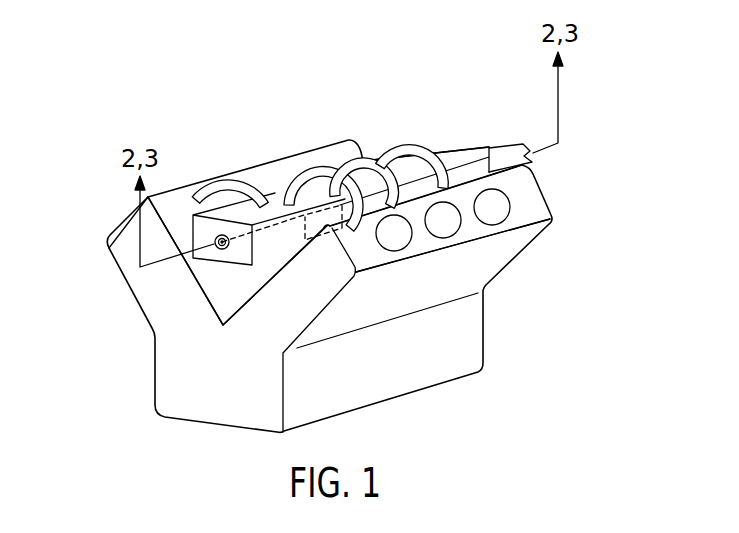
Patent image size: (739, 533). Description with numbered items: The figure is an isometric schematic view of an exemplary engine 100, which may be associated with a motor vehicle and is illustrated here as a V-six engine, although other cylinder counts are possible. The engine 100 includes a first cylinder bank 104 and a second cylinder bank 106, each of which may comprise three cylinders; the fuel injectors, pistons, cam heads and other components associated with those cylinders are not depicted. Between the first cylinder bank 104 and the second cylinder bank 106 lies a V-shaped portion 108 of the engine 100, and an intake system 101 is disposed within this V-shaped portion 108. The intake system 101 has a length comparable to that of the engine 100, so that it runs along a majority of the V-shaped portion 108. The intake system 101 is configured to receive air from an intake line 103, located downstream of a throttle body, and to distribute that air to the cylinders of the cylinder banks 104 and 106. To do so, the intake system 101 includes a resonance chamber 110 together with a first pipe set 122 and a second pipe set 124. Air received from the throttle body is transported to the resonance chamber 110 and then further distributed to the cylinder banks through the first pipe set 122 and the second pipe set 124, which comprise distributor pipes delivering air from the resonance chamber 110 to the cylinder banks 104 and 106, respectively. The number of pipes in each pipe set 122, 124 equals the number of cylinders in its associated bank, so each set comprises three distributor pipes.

The engine 100 is at (468, 342).
The intake system 101 is at (343, 62).
The intake line 103 is at (507, 148).
The first cylinder bank 104 is at (112, 258).
The second cylinder bank 106 is at (530, 202).
The V-shaped portion 108 is at (237, 293).
The resonance chamber 110 is at (460, 150).
The first pipe set 122 is at (223, 180).
The second pipe set 124 is at (403, 147).